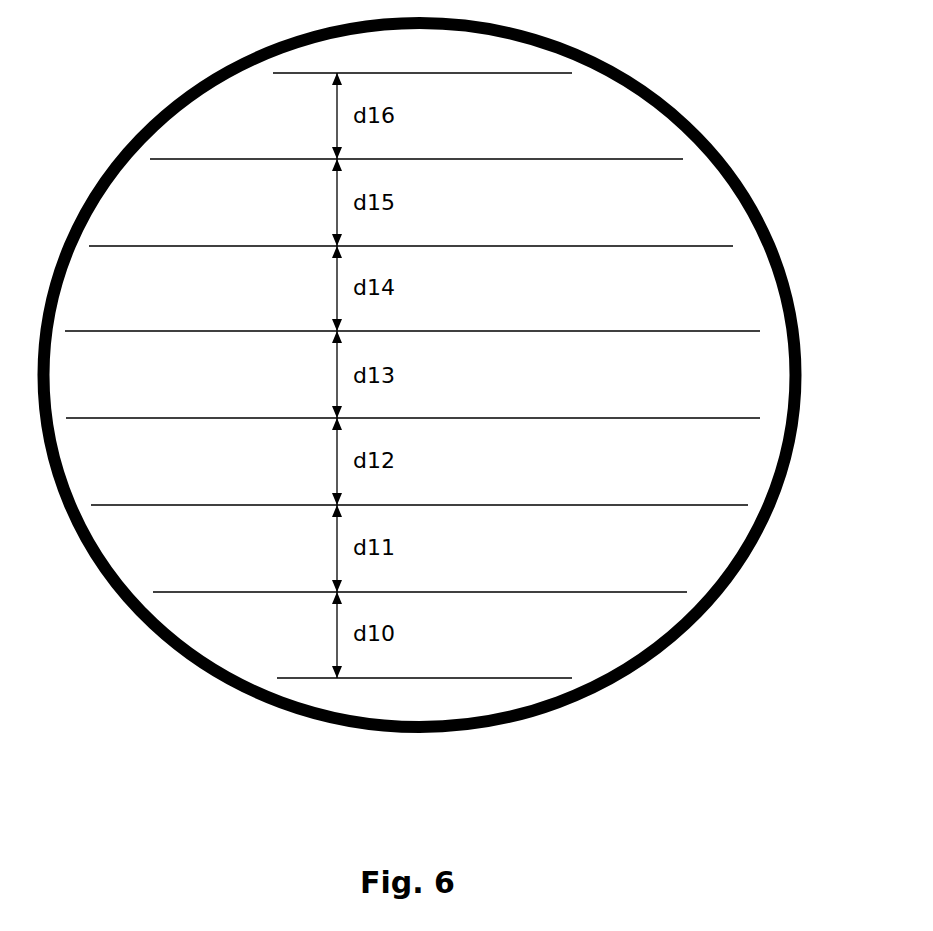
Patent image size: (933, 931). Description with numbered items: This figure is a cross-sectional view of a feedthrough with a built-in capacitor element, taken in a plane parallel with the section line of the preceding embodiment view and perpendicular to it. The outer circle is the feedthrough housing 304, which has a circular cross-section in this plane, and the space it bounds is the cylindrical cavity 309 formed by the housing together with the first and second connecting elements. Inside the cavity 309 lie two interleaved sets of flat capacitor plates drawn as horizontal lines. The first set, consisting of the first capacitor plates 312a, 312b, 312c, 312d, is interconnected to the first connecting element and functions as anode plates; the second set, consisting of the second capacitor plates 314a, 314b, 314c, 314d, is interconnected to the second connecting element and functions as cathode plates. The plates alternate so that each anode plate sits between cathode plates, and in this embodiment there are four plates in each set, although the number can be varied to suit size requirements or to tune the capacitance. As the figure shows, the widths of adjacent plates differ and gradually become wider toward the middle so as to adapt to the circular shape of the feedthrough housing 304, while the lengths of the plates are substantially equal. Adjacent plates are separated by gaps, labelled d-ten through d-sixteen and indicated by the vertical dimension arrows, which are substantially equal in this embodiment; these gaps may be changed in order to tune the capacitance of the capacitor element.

The feedthrough housing 304 is at (660, 93).
The cylindrical cavity 309 is at (755, 380).
The first capacitor plate 312a is at (480, 678).
The first capacitor plate 312b is at (503, 505).
The first capacitor plate 312c is at (545, 331).
The first capacitor plate 312d is at (593, 159).
The second capacitor plate 314a is at (232, 592).
The second capacitor plate 314b is at (194, 418).
The second capacitor plate 314c is at (157, 246).
The second capacitor plate 314d is at (555, 73).